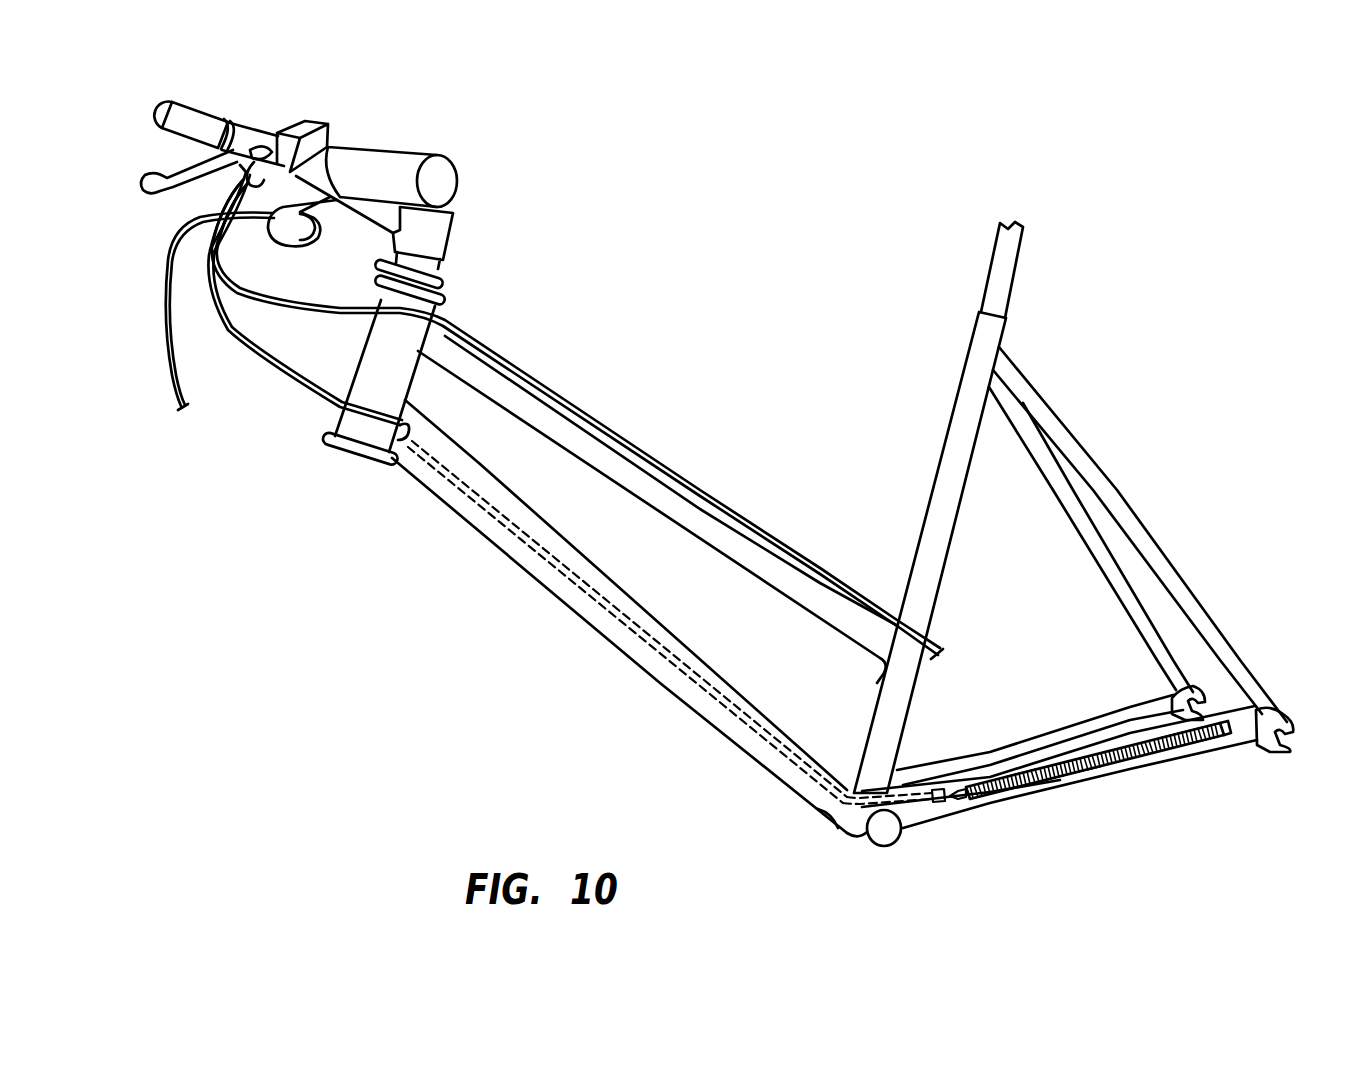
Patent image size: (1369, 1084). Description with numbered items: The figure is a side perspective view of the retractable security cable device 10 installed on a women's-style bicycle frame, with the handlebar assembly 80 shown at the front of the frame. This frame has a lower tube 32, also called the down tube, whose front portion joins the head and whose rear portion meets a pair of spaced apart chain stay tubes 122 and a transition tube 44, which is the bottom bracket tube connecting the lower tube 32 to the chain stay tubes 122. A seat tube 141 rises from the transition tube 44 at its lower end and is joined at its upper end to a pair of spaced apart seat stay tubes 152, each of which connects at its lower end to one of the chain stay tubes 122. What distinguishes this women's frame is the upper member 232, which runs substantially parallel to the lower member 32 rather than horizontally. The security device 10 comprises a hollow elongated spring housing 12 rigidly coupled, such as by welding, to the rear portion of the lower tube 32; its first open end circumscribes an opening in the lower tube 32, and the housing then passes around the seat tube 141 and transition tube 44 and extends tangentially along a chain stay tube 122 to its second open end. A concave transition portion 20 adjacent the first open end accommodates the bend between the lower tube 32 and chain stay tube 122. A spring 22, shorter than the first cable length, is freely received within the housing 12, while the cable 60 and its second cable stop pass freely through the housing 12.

The retractable security cable device 10 is at (293, 589).
The hollow elongated spring housing 12 is at (1052, 768).
The concave transition portion 20 is at (872, 792).
The spring 22 is at (1028, 796).
The lower tube 32 is at (670, 678).
The transition tube 44 is at (858, 835).
The cable 60 is at (628, 612).
The handlebar assembly 80 is at (368, 117).
The chain stay tubes 122 is at (1198, 691).
The seat tube 141 is at (955, 443).
The seat stay tubes 152 is at (1170, 563).
The upper member 232 is at (676, 505).